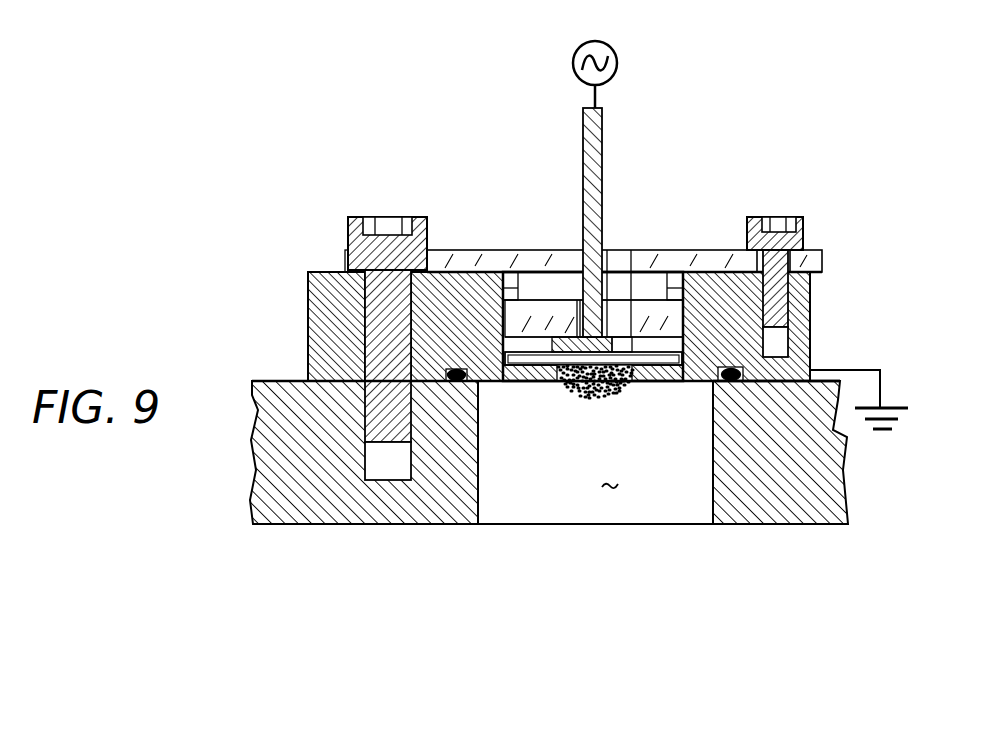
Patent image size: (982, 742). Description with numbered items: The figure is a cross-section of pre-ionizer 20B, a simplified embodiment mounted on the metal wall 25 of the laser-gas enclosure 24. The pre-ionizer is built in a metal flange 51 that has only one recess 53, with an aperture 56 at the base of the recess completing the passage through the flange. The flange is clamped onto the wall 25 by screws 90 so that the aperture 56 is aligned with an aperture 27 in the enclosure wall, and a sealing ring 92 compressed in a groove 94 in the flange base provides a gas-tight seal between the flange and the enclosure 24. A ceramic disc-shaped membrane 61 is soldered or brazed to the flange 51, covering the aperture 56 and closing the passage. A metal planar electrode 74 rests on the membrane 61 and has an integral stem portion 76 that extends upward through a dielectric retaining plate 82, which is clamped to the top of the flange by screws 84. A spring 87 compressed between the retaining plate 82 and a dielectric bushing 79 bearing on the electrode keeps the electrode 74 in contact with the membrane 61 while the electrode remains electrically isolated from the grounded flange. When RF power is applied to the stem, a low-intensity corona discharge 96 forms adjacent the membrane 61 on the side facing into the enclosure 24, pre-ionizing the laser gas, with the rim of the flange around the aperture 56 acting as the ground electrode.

The pre-ionizer 20B is at (488, 321).
The laser-gas enclosure 24 is at (582, 566).
The metal wall 25 is at (329, 533).
The aperture 27 is at (612, 492).
The flange 51 is at (300, 343).
The recess 53 is at (500, 352).
The aperture 56 is at (557, 382).
The disc-shaped membrane 61 is at (655, 378).
The planar electrode 74 is at (560, 330).
The stem portion 76 is at (606, 204).
The dielectric bushing 79 is at (695, 318).
The retaining plate 82 is at (698, 240).
The screws 84 is at (803, 230).
The spring 87 is at (494, 274).
The screws 90 is at (348, 225).
The sealing ring 92 is at (732, 383).
The groove 94 is at (789, 382).
The corona discharge 96 is at (617, 388).